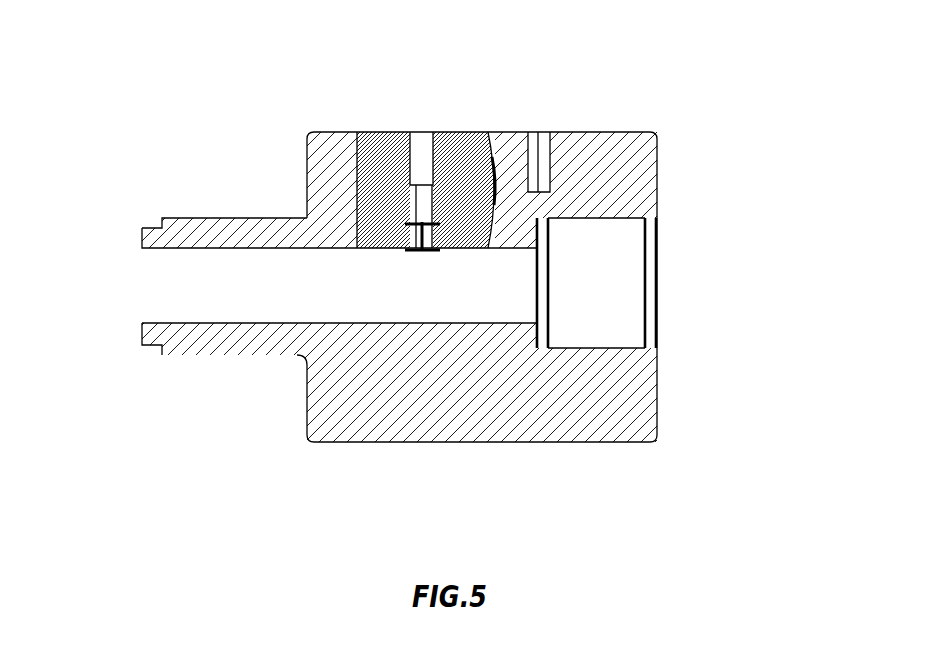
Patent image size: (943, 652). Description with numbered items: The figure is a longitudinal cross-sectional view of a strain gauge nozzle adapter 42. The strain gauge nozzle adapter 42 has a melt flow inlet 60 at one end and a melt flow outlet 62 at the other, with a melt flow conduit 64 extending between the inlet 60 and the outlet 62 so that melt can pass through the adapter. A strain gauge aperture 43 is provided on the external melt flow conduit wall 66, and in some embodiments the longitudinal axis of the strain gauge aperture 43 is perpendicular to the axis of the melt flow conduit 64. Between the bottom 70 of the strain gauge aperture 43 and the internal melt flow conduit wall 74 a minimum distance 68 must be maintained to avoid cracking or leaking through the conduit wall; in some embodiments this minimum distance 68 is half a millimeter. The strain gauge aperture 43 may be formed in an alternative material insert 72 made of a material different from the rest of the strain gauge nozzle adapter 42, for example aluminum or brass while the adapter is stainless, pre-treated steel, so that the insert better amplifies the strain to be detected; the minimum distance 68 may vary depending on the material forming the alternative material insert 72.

The strain gauge nozzle adapter 42 is at (674, 72).
The strain gauge aperture 43 is at (422, 138).
The melt flow inlet 60 is at (148, 275).
The melt flow outlet 62 is at (627, 275).
The melt flow conduit 64 is at (272, 295).
The external melt flow conduit wall 66 is at (505, 135).
The minimum distance 68 is at (420, 237).
The bottom of the strain gauge aperture 70 is at (420, 220).
The alternative material insert 72 is at (357, 172).
The internal melt flow conduit wall 74 is at (330, 246).